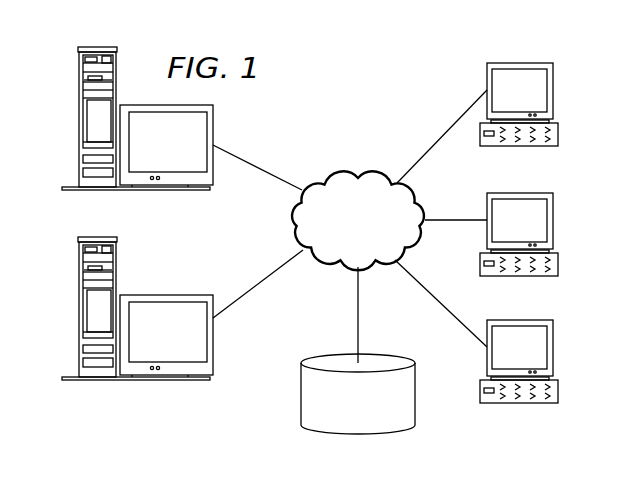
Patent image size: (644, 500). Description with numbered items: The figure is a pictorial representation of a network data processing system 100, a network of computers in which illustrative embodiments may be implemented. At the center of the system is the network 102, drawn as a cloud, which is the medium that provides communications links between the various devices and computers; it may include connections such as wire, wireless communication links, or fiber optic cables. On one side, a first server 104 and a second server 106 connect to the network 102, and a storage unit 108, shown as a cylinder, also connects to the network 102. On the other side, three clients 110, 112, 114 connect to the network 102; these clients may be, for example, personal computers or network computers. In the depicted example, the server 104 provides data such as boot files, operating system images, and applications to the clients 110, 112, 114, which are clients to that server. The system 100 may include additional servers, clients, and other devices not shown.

The network data processing system 100 is at (403, 76).
The network 102 is at (334, 176).
The server 104 is at (79, 120).
The server 106 is at (79, 305).
The storage unit 108 is at (342, 430).
The client 110 is at (553, 92).
The client 112 is at (553, 221).
The client 114 is at (553, 348).